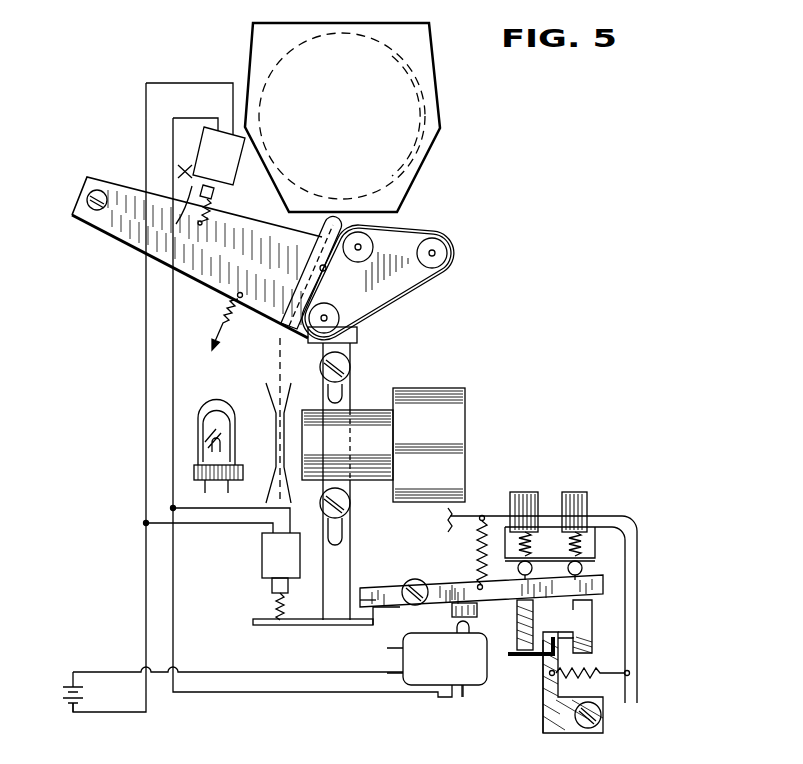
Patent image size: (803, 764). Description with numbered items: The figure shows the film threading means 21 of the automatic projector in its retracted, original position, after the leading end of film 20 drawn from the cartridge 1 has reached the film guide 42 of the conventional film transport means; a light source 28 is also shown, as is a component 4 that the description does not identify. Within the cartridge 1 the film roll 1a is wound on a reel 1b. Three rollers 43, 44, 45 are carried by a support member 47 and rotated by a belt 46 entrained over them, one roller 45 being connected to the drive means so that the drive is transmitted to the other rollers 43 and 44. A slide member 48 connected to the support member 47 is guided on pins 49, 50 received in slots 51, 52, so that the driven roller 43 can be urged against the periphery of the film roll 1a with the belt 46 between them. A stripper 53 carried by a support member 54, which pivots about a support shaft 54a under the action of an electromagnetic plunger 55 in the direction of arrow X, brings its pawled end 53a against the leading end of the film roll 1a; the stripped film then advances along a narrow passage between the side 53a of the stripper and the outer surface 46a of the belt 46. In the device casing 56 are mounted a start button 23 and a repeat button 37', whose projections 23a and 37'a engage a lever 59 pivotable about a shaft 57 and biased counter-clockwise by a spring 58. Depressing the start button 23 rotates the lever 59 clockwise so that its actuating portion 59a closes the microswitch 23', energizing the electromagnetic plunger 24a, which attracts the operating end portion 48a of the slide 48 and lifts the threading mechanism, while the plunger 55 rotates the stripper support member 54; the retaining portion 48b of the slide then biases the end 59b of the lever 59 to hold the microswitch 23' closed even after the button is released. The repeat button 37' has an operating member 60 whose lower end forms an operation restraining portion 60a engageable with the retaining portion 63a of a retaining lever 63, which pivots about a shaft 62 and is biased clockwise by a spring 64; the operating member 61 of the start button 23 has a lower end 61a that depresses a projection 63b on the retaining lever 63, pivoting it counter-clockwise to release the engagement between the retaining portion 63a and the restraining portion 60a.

The cartridge 1 is at (428, 47).
The film roll 1a is at (407, 130).
The reel 1b is at (412, 97).
The drive motor 4 is at (456, 420).
The film 20 is at (283, 342).
The film threading means 21 is at (492, 237).
The start button 23 is at (523, 497).
The microswitch 23' is at (450, 704).
The projection 23a is at (572, 640).
The electromagnetic plunger 24a is at (262, 553).
The light source 28 is at (208, 400).
The repeat button 37' is at (573, 497).
The projection 37'a is at (632, 555).
The film guide 42 is at (266, 412).
The driven roller 43 is at (357, 232).
The roller 44 is at (449, 255).
The roller 45 is at (341, 321).
The belt 46 is at (412, 288).
The outer surface of belt 46a is at (327, 272).
The support member 47 is at (400, 253).
The slide member 48 is at (344, 418).
The operating end portion 48a is at (303, 626).
The retaining portion 48b is at (370, 626).
The pin 49 is at (350, 367).
The pin 50 is at (349, 505).
The slot 51 is at (343, 393).
The slot 52 is at (341, 540).
The stripper 53 is at (262, 304).
The pawled end 53a is at (322, 228).
The support member 54 is at (220, 268).
The support shaft 54a is at (97, 211).
The plunger 55 is at (234, 172).
The device casing 56 is at (638, 595).
The shaft 57 is at (415, 579).
The spring 58 is at (484, 516).
The lever 59 is at (604, 585).
The actuating portion 59a is at (455, 592).
The end of lever 59b is at (378, 600).
The operating member 60 is at (584, 604).
The operation restraining portion 60a is at (559, 633).
The operating member 61 is at (517, 609).
The lower end 61a is at (518, 637).
The shaft 62 is at (601, 718).
The retaining lever 63 is at (543, 722).
The retaining portion 63a is at (511, 658).
The projection 63b is at (507, 662).
The spring 64 is at (605, 671).